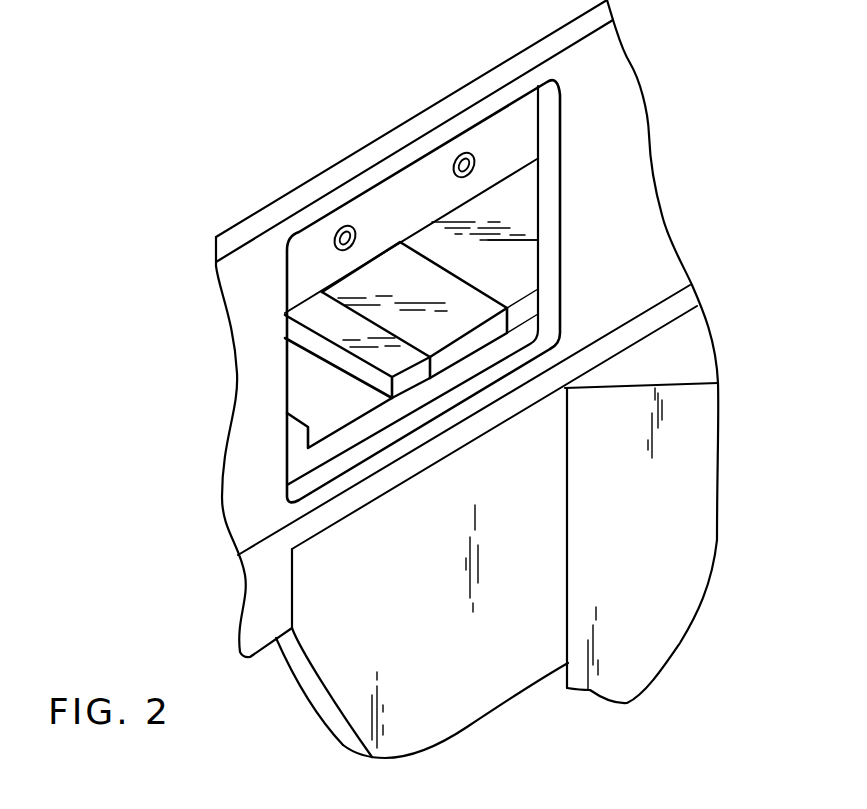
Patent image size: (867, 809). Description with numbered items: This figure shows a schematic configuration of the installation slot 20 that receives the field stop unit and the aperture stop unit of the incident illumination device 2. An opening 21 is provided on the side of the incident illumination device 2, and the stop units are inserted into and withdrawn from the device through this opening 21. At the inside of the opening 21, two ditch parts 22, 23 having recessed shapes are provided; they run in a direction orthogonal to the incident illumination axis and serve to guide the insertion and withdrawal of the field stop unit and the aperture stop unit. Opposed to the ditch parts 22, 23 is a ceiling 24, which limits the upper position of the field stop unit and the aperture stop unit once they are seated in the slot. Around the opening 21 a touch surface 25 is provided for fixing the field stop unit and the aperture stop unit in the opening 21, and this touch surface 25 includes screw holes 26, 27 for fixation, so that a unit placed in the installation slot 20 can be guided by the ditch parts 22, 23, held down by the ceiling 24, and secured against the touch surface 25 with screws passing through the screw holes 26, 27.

The incident illumination device 2 is at (256, 266).
The installation slot 20 is at (752, 243).
The opening 21 is at (290, 380).
The ditch part 22 is at (347, 413).
The ditch part 23 is at (455, 343).
The ceiling 24 is at (497, 183).
The touch surface 25 is at (412, 180).
The screw hole 26 is at (348, 227).
The screw hole 27 is at (463, 148).